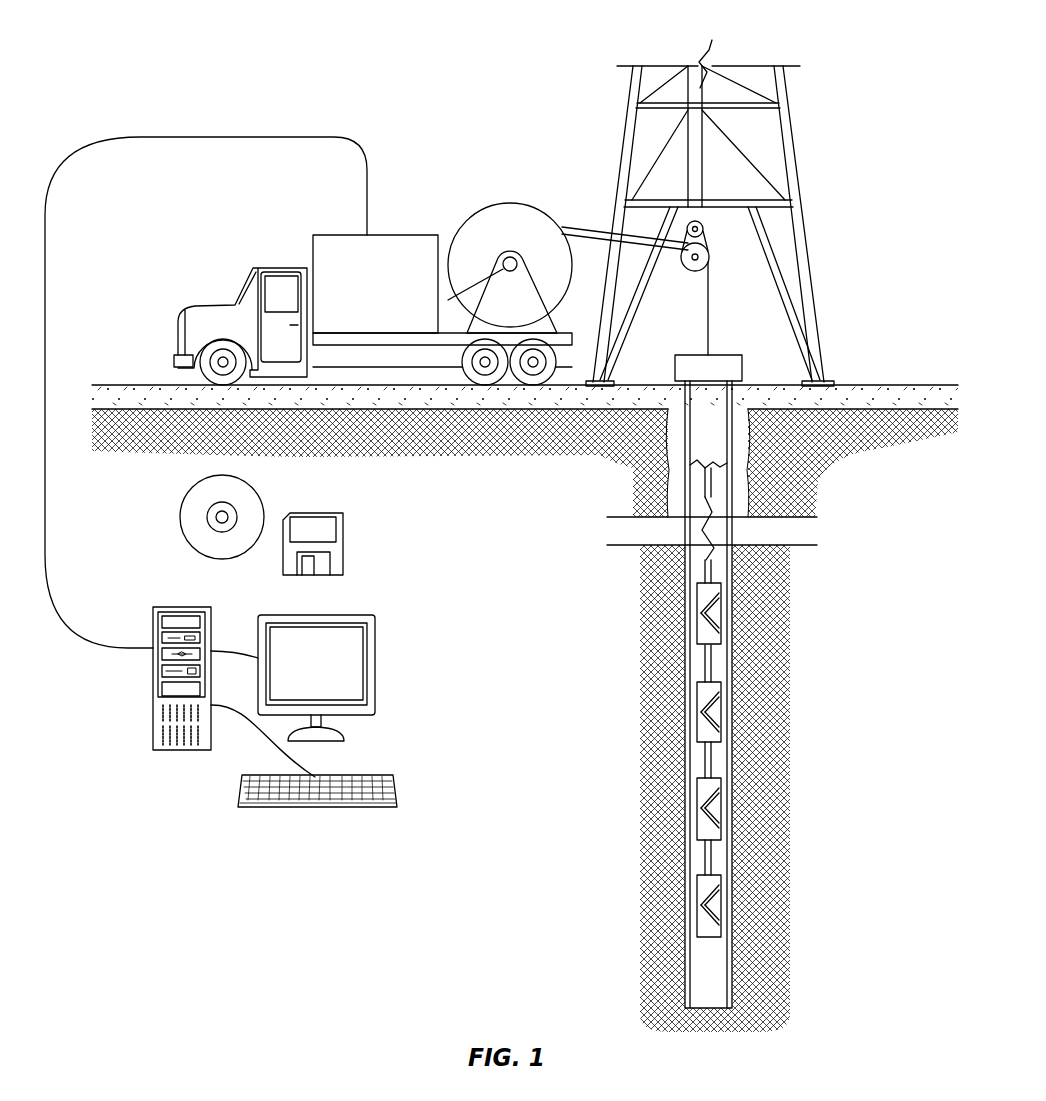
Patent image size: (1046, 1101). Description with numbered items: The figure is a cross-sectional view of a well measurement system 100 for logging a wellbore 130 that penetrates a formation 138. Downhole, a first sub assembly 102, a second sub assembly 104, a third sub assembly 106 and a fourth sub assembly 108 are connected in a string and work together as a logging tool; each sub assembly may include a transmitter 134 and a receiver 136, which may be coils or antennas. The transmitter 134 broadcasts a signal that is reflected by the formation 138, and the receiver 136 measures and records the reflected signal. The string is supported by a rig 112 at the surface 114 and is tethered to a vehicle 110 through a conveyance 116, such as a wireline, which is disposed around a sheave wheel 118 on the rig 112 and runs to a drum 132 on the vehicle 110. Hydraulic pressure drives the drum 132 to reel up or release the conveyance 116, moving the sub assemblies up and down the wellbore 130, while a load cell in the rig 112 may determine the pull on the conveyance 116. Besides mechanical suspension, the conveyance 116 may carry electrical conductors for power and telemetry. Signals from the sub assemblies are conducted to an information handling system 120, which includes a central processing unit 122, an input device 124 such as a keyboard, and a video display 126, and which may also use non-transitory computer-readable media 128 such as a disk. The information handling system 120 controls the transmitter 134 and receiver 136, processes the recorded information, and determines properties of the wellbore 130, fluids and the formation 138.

The well measurement system 100 is at (176, 58).
The first sub assembly 102 is at (700, 902).
The second sub assembly 104 is at (723, 805).
The third sub assembly 106 is at (700, 712).
The fourth sub assembly 108 is at (723, 616).
The vehicle 110 is at (388, 236).
The rig 112 is at (805, 217).
The surface 114 is at (868, 385).
The conveyance 116 is at (703, 565).
The sheave wheel 118 is at (693, 271).
The information handling system 120 is at (177, 831).
The central processing unit 122 is at (185, 607).
The input device 124 is at (400, 790).
The video display 126 is at (320, 615).
The non-transitory computer-readable media 128 is at (313, 513).
The wellbore 130 is at (800, 498).
The drum 132 is at (512, 205).
The transmitter 134 is at (700, 600).
The receiver 136 is at (700, 618).
The formation 138 is at (910, 626).